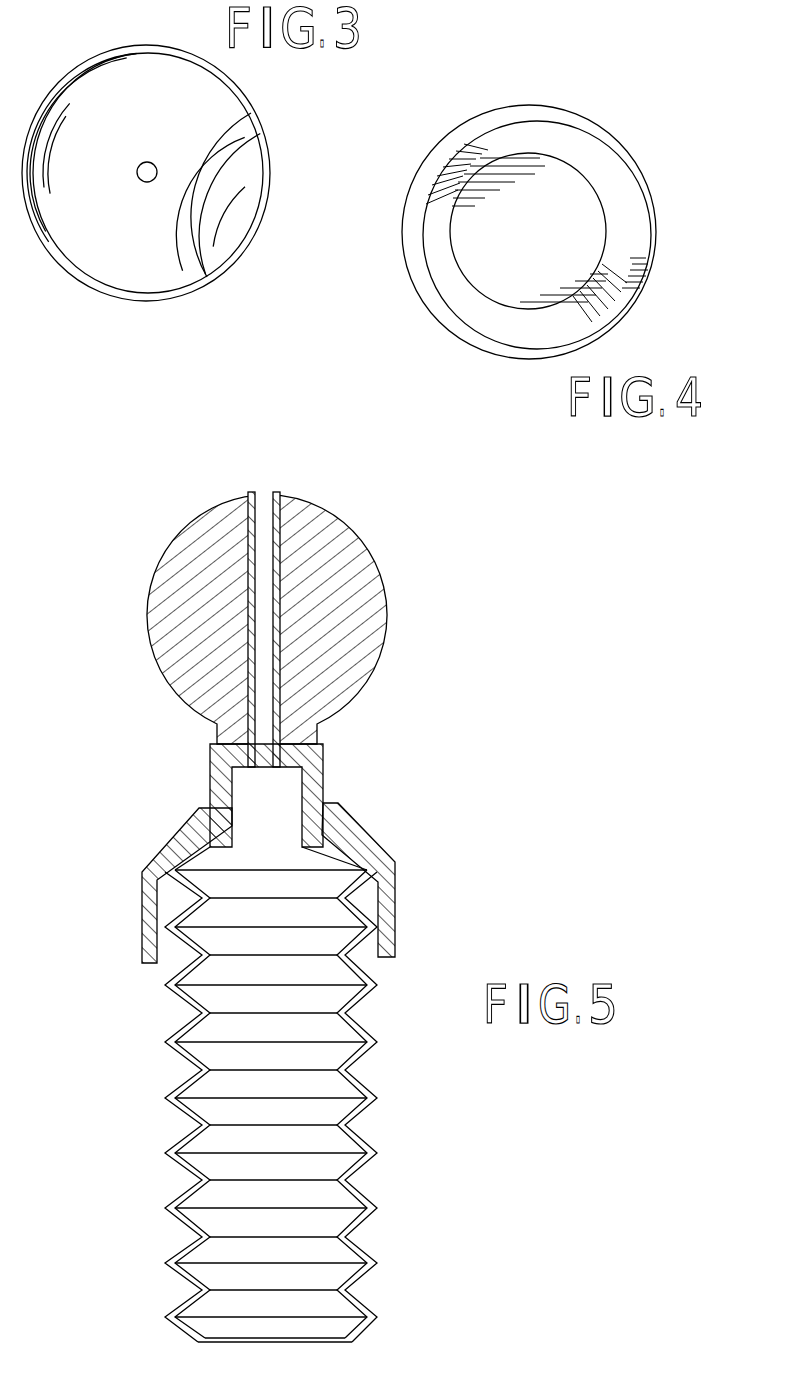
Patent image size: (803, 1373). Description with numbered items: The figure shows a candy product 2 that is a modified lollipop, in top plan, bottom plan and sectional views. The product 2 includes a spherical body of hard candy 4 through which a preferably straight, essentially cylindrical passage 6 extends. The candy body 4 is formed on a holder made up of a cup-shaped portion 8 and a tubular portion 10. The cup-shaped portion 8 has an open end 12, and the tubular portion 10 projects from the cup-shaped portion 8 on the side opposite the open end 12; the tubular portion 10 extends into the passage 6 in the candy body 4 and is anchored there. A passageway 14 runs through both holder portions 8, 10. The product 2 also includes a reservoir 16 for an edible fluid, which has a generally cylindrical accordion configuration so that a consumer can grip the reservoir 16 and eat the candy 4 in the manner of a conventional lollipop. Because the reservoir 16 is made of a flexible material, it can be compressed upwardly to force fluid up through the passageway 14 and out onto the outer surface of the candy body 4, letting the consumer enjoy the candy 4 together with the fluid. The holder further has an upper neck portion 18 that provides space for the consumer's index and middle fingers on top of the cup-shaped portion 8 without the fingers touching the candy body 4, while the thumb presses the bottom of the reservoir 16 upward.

In FIG. 5, the candy product 2 is at (447, 680).
In FIG. 3, the body of hard candy 4 is at (171, 117).
In FIG. 5, the body of hard candy 4 is at (355, 560).
In FIG. 3, the passage 6 is at (145, 180).
In FIG. 5, the passage 6 is at (255, 610).
In FIG. 3, the cup-shaped portion 8 is at (268, 135).
In FIG. 4, the cup-shaped portion 8 is at (600, 122).
In FIG. 5, the cup-shaped portion 8 is at (397, 887).
In FIG. 5, the tubular portion 10 is at (285, 700).
In FIG. 5, the open end 12 is at (160, 965).
In FIG. 5, the passageway 14 is at (258, 505).
In FIG. 4, the reservoir 16 is at (617, 203).
In FIG. 5, the reservoir 16 is at (360, 1188).
In FIG. 5, the upper neck portion 18 is at (207, 780).